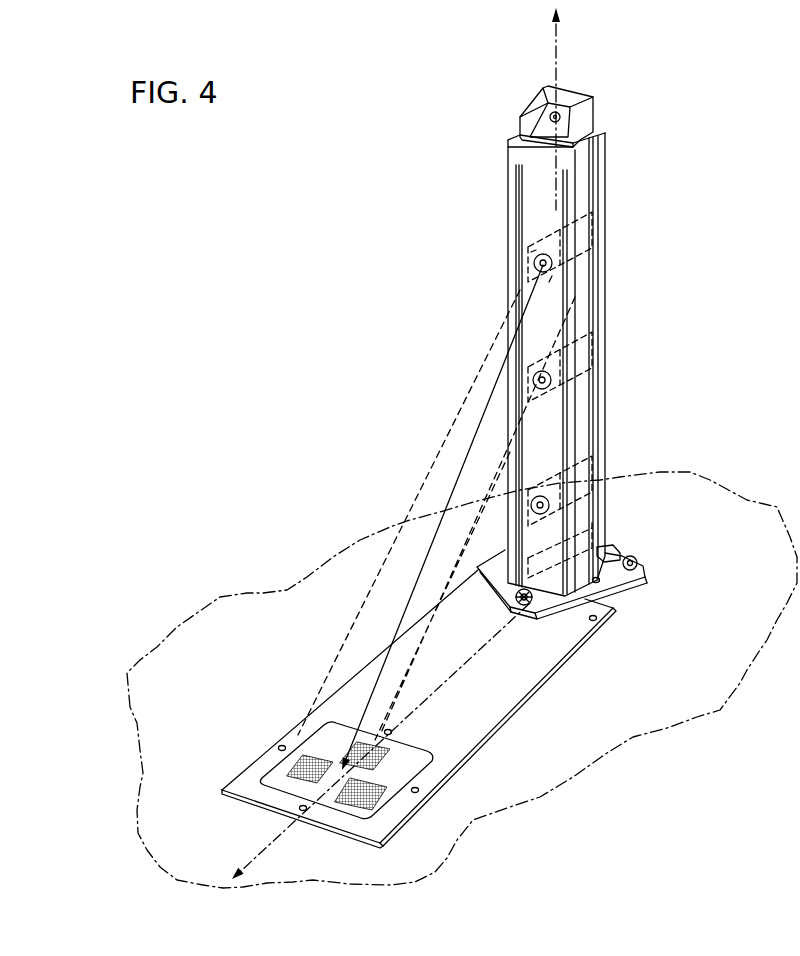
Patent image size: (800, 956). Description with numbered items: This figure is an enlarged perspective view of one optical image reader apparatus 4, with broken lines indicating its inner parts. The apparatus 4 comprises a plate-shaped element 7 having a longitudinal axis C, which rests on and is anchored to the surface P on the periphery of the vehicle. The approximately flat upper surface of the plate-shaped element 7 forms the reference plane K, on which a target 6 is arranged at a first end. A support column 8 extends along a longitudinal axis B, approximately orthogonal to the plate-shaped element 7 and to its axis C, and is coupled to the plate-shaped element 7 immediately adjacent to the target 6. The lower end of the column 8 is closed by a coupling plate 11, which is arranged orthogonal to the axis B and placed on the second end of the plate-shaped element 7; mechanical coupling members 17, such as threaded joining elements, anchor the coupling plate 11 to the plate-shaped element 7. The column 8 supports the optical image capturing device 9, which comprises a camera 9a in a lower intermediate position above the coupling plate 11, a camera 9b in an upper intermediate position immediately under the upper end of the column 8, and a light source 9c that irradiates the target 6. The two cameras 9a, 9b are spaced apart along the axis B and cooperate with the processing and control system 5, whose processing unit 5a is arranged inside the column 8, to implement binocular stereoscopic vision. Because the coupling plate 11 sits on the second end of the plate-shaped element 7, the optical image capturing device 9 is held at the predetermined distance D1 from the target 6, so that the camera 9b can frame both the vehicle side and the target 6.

The optical image reader apparatus 4 is at (410, 373).
The support column 8 is at (520, 205).
The optical image capturing device 9 is at (607, 349).
The camera 9a is at (600, 453).
The camera 9b is at (603, 211).
The light source 9c is at (603, 340).
The processing and control system 5 is at (609, 532).
The processing unit 5a is at (603, 521).
The coupling plate 11 is at (596, 594).
The mechanical coupling members 17 is at (533, 610).
The target 6 is at (272, 777).
The plate-shaped element 7 is at (525, 665).
The reference plane K is at (497, 697).
The longitudinal axis C is at (290, 826).
The surface P is at (252, 618).
The predetermined distance D1 is at (442, 517).
The longitudinal axis B is at (560, 67).